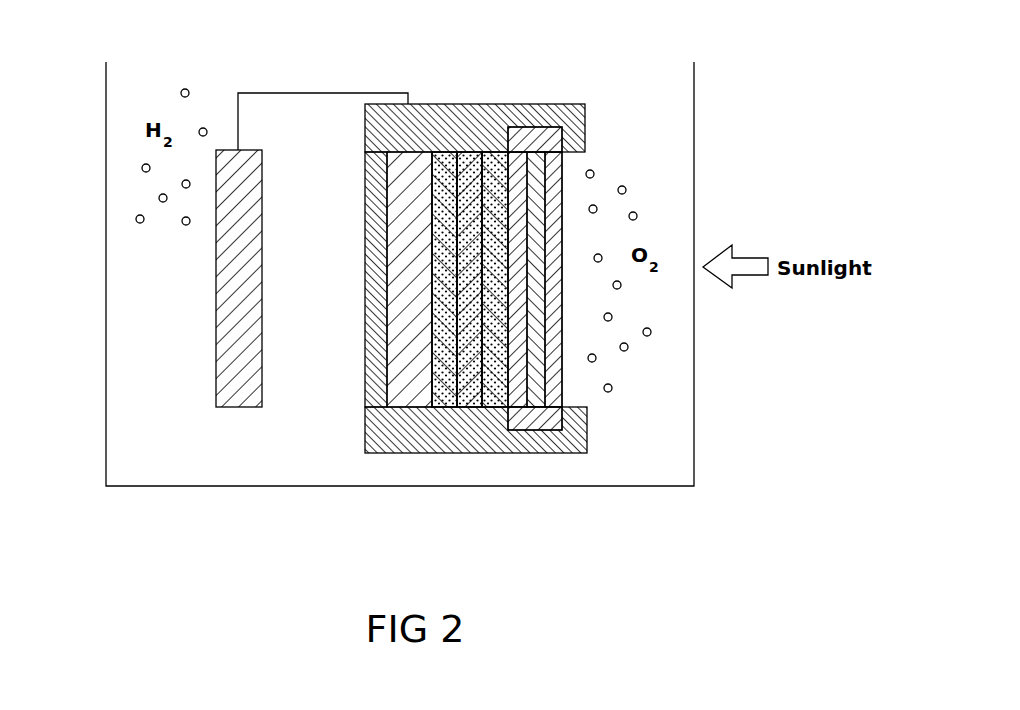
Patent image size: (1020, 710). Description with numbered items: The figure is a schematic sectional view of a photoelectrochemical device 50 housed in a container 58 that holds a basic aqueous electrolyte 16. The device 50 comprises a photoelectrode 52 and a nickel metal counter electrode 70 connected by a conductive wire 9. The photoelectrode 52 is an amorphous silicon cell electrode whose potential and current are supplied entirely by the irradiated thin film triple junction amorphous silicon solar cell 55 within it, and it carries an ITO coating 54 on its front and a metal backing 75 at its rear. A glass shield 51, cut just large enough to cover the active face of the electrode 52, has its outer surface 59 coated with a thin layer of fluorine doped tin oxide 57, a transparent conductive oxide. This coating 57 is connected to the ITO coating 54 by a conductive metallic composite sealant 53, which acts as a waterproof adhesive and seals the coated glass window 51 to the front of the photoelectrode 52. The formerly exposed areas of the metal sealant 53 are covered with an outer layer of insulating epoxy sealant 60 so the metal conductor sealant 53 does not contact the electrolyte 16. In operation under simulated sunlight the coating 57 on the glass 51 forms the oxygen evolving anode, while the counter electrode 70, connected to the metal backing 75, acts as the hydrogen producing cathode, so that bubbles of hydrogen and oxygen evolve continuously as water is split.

The conductive wire 9 is at (311, 93).
The electrolyte 16 is at (330, 290).
The photoelectrochemical device 50 is at (752, 108).
The glass shield 51 is at (538, 152).
The photoelectrode 52 is at (587, 475).
The conductive metallic composite sealant 53 is at (548, 152).
The ITO coating 54 is at (517, 148).
The thin film triple junction amorphous silicon solar cell 55 is at (447, 407).
The fluorine doped tin oxide coating 57 is at (563, 158).
The container 58 is at (105, 165).
The outer surface 59 is at (560, 236).
The insulating sealant 60 is at (367, 440).
The counter electrode 70 is at (216, 326).
The metal backing 75 is at (408, 407).